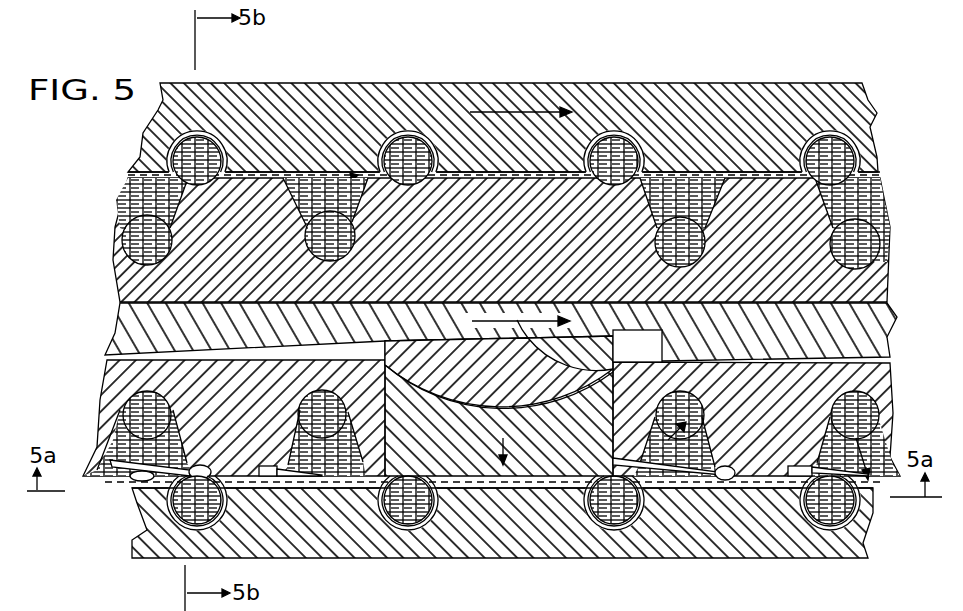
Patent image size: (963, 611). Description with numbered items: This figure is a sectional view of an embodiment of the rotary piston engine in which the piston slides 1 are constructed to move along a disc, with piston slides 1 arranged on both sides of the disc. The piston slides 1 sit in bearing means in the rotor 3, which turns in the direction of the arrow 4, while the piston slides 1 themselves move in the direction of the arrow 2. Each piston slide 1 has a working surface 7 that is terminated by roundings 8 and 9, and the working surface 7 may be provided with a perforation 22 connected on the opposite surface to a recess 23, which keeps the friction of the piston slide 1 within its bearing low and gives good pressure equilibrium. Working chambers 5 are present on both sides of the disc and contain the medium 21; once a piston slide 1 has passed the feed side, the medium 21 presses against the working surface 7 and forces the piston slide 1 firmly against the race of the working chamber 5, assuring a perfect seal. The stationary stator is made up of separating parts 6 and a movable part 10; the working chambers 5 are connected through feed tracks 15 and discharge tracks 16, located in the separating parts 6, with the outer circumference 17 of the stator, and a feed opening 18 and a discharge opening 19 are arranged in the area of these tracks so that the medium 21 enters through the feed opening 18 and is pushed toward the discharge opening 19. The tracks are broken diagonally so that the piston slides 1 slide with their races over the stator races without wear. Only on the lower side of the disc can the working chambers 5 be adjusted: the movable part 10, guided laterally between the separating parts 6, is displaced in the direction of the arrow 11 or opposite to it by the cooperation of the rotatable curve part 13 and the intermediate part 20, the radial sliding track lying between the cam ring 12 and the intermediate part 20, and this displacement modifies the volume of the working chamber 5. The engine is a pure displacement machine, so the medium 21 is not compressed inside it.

The piston slide 1 is at (167, 160).
The arrow 2 is at (405, 142).
The rotor 3 is at (325, 105).
The arrow 4 is at (488, 110).
The working chamber 5 is at (521, 174).
The separating part 6 is at (760, 455).
The working surface 7 is at (170, 165).
The rounding 8 is at (607, 138).
The rounding 9 is at (646, 176).
The movable part 10 is at (462, 462).
The arrow 11 is at (508, 456).
The cam ring 12 is at (130, 324).
The rotatable curve part 13 is at (600, 357).
The feed track 15 is at (297, 478).
The discharge track 16 is at (752, 200).
The outer circumference of the stator 17 is at (252, 172).
The feed opening 18 is at (318, 240).
The discharge opening 19 is at (686, 238).
The intermediate part 20 is at (540, 385).
The medium 21 is at (481, 452).
The perforation 22 is at (826, 145).
The recess 23 is at (806, 138).